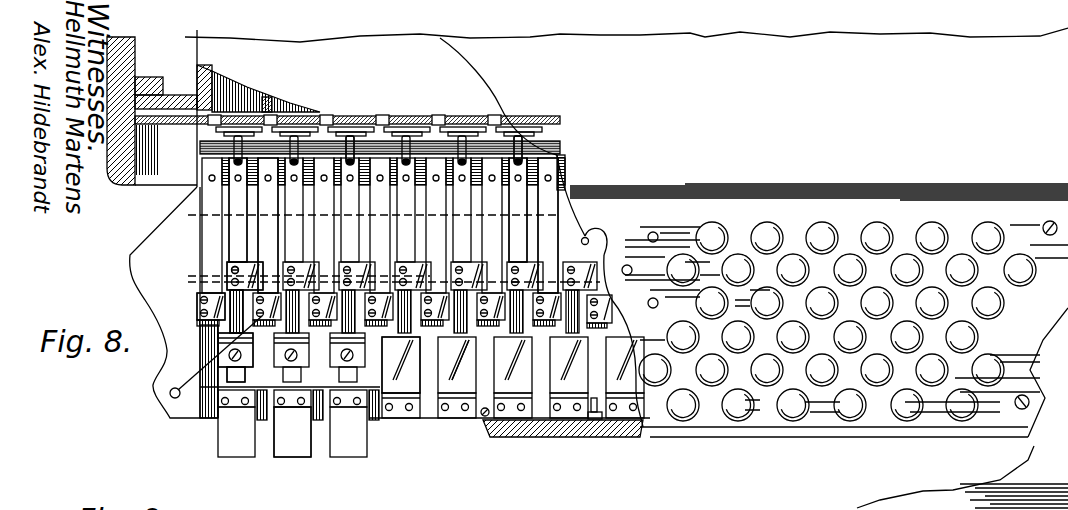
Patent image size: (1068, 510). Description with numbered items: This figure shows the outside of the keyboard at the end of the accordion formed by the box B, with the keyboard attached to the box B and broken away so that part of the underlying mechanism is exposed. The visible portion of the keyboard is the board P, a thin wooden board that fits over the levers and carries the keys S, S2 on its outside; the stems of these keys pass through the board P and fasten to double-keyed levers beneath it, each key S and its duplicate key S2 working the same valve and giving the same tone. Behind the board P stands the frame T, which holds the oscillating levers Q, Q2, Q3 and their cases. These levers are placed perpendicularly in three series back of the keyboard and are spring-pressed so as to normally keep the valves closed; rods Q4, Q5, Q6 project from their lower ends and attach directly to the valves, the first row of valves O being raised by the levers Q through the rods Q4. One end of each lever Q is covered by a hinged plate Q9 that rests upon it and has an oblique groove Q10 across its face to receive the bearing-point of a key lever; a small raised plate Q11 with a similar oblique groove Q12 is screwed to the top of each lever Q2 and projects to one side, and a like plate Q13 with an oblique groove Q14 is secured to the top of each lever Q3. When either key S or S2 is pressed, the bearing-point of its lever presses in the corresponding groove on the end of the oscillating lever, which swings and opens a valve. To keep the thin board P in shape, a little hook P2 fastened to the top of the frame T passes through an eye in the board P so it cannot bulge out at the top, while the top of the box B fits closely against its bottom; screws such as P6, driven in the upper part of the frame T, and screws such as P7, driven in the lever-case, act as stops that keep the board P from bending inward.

The box B is at (626, 268).
The frame T is at (159, 224).
The valve O is at (408, 127).
The board P is at (819, 310).
The hook P2 is at (578, 437).
The screw P6 is at (484, 419).
The screw P7 is at (587, 237).
The oscillating lever Q is at (234, 371).
The oscillating lever Q2 is at (235, 231).
The oscillating lever Q3 is at (262, 289).
The rod Q4 is at (514, 151).
The rod Q5 is at (521, 178).
The rod Q6 is at (548, 180).
The hinged plate Q9 is at (326, 458).
The oblique groove Q10 is at (453, 378).
The small plate Q11 is at (233, 275).
The oblique groove Q12 is at (249, 259).
The plate Q13 is at (172, 396).
The oblique groove Q14 is at (221, 298).
The key S is at (670, 446).
The key S2 is at (739, 270).